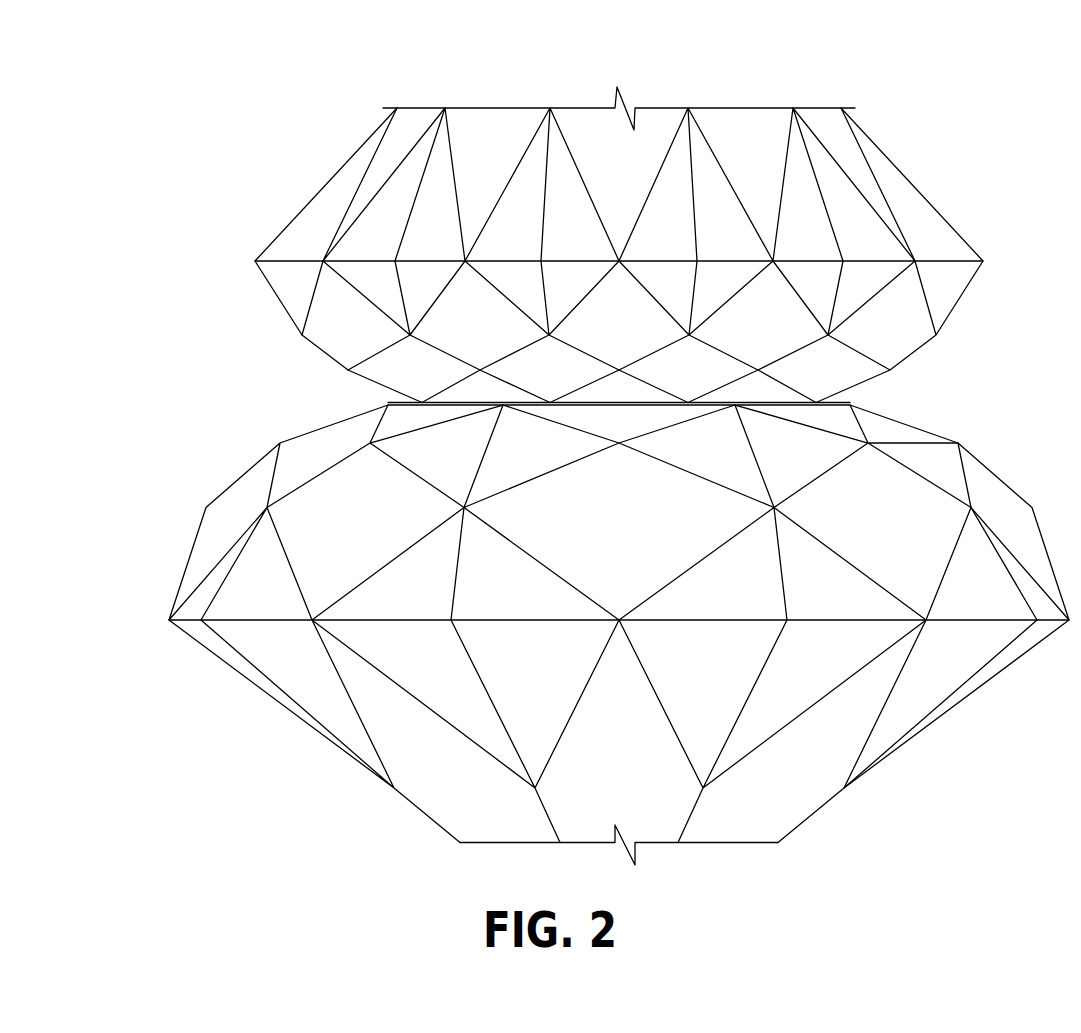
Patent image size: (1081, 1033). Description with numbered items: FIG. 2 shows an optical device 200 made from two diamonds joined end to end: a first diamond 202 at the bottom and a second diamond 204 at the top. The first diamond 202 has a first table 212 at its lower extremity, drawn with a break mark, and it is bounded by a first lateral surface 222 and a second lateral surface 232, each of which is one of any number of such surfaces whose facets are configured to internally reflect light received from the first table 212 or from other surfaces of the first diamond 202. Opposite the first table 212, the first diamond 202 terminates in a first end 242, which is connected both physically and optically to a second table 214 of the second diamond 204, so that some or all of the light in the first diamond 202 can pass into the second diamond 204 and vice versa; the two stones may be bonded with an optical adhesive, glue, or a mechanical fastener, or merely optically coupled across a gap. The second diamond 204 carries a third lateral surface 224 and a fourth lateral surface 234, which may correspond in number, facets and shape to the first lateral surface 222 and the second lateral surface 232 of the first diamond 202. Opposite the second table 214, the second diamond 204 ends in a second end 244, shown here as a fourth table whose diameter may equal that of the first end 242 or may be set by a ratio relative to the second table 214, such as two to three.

The gemstone 200 is at (619, 475).
The first diamond 202 is at (619, 656).
The second diamond 204 is at (601, 216).
The first table 212 is at (657, 851).
The second table 214 is at (383, 397).
The first lateral surface 222 is at (910, 714).
The third lateral surface 224 is at (324, 346).
The second lateral surface 232 is at (970, 476).
The fourth lateral surface 234 is at (366, 173).
The first end 242 is at (862, 396).
The second end 244 is at (634, 89).